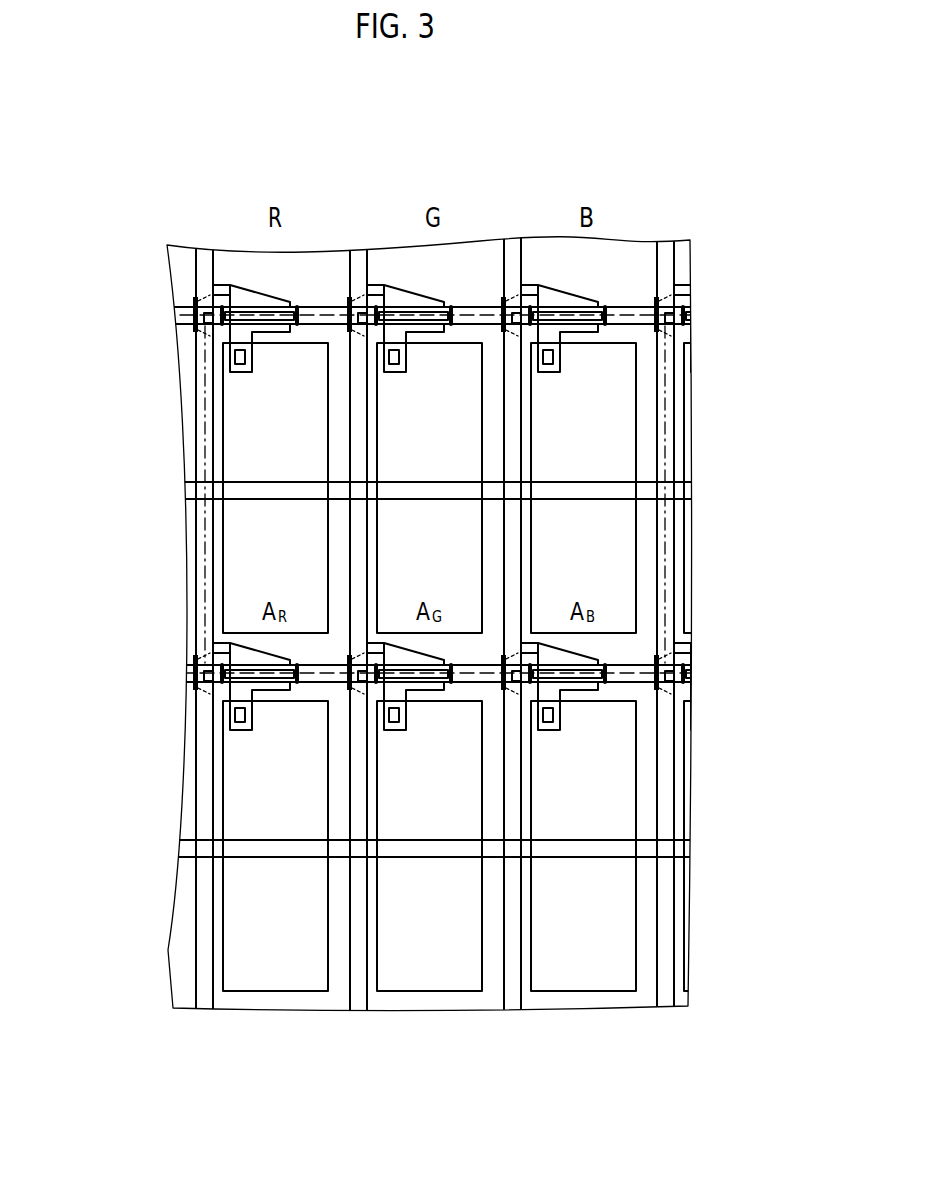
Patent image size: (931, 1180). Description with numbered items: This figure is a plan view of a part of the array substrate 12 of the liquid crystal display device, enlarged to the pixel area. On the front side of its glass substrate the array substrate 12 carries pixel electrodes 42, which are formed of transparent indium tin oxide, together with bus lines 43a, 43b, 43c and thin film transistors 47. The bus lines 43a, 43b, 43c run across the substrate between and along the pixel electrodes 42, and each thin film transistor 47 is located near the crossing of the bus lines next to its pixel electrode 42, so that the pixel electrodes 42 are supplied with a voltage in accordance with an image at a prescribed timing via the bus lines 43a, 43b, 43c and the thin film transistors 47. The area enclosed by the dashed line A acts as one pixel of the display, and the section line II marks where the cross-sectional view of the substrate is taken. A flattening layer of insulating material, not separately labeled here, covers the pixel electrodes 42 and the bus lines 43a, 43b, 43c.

The array substrate 12 is at (749, 211).
The pixel electrodes 42 is at (296, 530).
The bus line 43a is at (213, 267).
The bus line 43b is at (193, 300).
The bus line 43c is at (183, 500).
The thin film transistors 47 is at (266, 369).
The dashed line A is at (665, 531).
The section line II- II is at (145, 400).